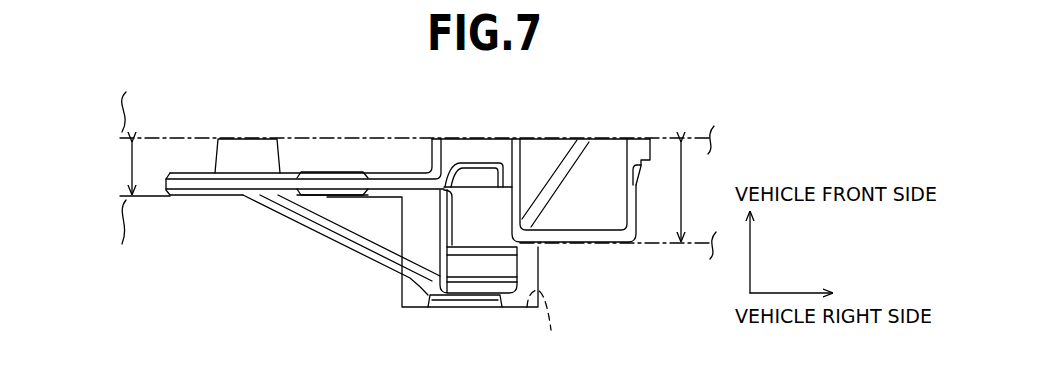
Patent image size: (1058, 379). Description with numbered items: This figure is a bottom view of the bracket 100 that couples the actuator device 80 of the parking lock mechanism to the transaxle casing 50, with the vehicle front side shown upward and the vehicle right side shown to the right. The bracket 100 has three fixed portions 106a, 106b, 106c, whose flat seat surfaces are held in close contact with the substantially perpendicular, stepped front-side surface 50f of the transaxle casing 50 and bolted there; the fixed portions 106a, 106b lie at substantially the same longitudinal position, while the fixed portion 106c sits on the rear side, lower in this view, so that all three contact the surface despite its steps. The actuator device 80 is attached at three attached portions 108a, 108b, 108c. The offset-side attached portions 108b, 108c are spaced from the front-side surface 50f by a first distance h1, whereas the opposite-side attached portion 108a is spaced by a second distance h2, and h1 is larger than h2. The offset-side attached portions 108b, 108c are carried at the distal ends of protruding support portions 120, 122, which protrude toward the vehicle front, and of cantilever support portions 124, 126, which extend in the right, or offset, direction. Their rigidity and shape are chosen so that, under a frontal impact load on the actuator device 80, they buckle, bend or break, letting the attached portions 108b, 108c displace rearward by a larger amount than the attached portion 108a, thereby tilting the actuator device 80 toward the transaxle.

The transaxle casing 50 is at (116, 227).
The front-side surface 50f is at (544, 326).
The actuator device 80 is at (116, 103).
The bracket 100 is at (294, 262).
The fixed portion 106a is at (197, 198).
The fixed portion 106b is at (328, 198).
The fixed portion 106c is at (458, 308).
The opposite-side attached portion 108a is at (242, 137).
The offset-side attached portion 108b is at (457, 137).
The offset-side attached portion 108c is at (610, 137).
The protruding support portion 120 is at (501, 198).
The protruding support portion 122 is at (606, 210).
The cantilever support portion 124 is at (386, 183).
The cantilever support portion 126 is at (557, 178).
The first distance h1 is at (694, 191).
The second distance h2 is at (116, 167).